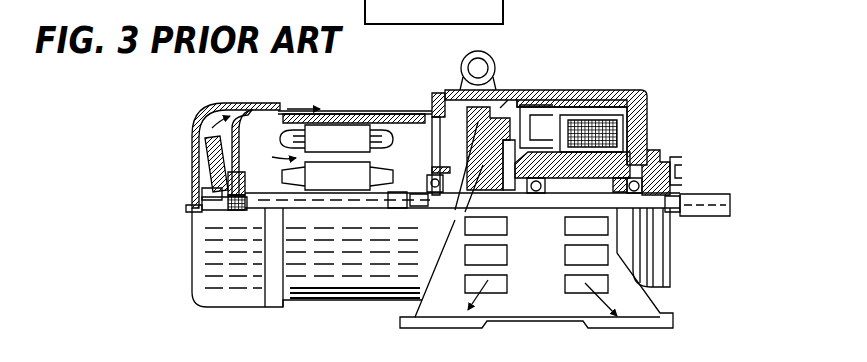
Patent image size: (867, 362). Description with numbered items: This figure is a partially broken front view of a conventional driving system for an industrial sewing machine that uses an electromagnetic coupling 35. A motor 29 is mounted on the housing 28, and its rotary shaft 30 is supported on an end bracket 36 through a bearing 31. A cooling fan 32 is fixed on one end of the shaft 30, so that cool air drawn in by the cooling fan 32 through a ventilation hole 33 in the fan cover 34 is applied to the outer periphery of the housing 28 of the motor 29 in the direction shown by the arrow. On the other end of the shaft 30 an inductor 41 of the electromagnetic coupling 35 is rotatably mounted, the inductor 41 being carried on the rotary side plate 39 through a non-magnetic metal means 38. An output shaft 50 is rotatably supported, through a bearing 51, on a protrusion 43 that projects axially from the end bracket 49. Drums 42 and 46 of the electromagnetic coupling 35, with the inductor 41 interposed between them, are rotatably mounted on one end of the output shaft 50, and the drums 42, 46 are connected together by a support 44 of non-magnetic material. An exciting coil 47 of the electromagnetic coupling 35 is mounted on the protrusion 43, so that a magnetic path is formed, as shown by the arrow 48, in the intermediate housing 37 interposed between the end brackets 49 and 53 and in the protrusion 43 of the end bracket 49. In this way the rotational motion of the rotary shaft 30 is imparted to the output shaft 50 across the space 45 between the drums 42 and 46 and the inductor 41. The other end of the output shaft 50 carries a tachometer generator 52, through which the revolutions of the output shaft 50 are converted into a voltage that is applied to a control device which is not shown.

The housing 28 is at (341, 112).
The motor 29 is at (273, 156).
The rotary shaft 30 is at (298, 208).
The bearing 31 is at (232, 210).
The cooling fan 32 is at (190, 206).
The ventilation hole 33 is at (188, 183).
The fan cover 34 is at (207, 110).
The electromagnetic coupling 35 is at (516, 99).
The end bracket 36 is at (253, 103).
The intermediate housing 37 is at (511, 104).
The non-magnetic metal means 38 is at (457, 110).
The rotary side plate 39 is at (442, 147).
The inductor 41 is at (497, 140).
The drum 42 is at (527, 116).
The protrusion 43 is at (557, 197).
The support 44 is at (562, 117).
The space 45 is at (455, 210).
The drum 46 is at (465, 212).
The exciting coil 47 is at (621, 108).
The arrow 48 is at (614, 118).
The end bracket 49 is at (645, 93).
The output shaft 50 is at (524, 200).
The bearing 51 is at (640, 152).
The tachometer generator 52 is at (682, 160).
The end bracket 53 is at (417, 111).